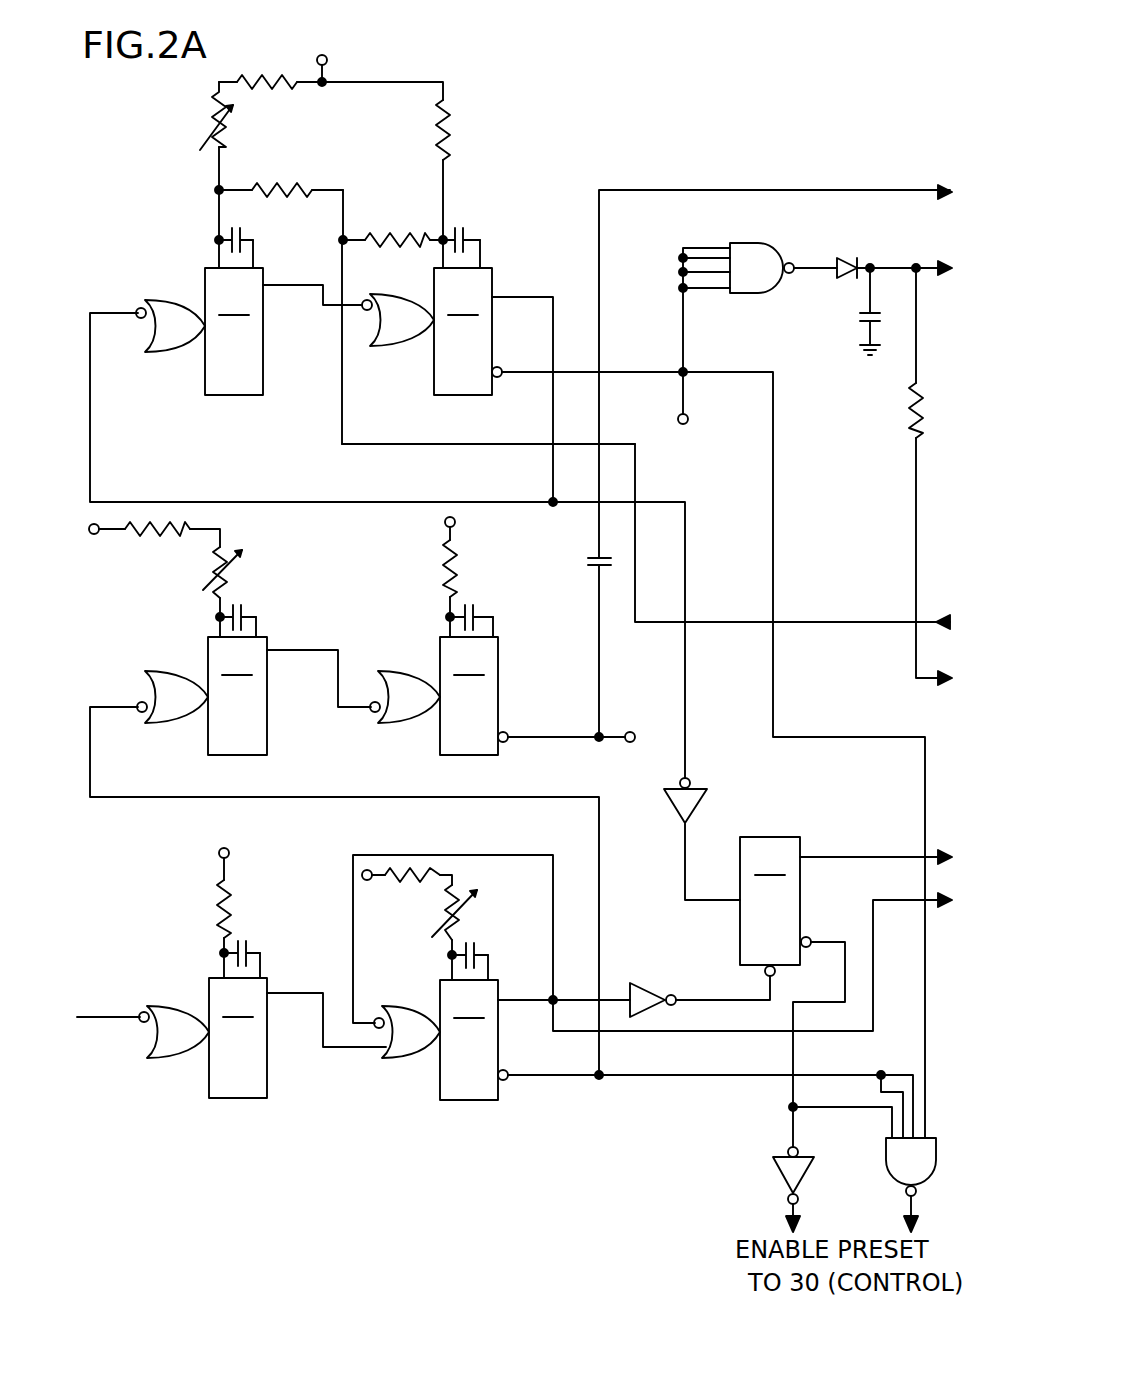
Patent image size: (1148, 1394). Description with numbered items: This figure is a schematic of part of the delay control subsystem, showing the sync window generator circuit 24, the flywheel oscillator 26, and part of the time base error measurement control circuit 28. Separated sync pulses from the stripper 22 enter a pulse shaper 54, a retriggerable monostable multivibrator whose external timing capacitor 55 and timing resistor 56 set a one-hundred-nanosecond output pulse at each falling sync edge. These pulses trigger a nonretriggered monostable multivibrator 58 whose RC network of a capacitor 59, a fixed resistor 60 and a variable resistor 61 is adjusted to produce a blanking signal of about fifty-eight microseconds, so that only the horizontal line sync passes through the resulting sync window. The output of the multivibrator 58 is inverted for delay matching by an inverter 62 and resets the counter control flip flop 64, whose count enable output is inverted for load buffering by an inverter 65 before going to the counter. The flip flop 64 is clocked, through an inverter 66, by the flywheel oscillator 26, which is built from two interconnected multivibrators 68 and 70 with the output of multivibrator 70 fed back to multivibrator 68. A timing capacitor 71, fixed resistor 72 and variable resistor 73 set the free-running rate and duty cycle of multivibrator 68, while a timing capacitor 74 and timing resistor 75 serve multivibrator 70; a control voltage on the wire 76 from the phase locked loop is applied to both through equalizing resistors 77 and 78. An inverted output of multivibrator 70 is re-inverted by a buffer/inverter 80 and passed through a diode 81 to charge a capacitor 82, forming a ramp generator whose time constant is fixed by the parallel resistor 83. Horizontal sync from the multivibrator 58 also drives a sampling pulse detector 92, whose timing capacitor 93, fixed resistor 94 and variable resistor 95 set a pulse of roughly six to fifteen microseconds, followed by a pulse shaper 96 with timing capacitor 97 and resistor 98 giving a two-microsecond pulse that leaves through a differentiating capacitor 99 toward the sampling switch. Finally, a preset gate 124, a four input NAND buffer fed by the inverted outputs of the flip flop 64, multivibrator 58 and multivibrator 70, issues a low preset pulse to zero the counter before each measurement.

The stripper 22 is at (120, 1074).
The sync window generator circuit 24 is at (362, 1140).
The flywheel oscillator 26 is at (183, 231).
The time base error measurement control circuit 28 is at (680, 1145).
The pulse shaper 54 is at (207, 1038).
The timing capacitor 55 is at (250, 950).
The timing resistor 56 is at (236, 900).
The nonretriggered monostable multivibrator 58 is at (440, 1040).
The capacitor 59 is at (480, 950).
The fixed resistor 60 is at (413, 884).
The variable resistor 61 is at (468, 905).
The inverter 62 is at (664, 984).
The counter control flip flop 64 is at (770, 901).
The inverter 65 is at (775, 1170).
The inverter 66 is at (698, 790).
The multivibrator 68 is at (204, 331).
The multivibrator 70 is at (431, 331).
The timing capacitor 71 is at (244, 235).
The fixed resistor 72 is at (250, 74).
The variable resistor 73 is at (207, 122).
The timing capacitor 74 is at (467, 235).
The timing resistor 75 is at (462, 130).
The wire 76 is at (360, 440).
The equalizing resistor 77 is at (281, 178).
The equalizing resistor 78 is at (412, 236).
The buffer/inverter 80 is at (730, 243).
The diode 81 is at (856, 258).
The capacitor 82 is at (861, 320).
The parallel resistor 83 is at (908, 420).
The sampling pulse detector 92 is at (206, 696).
The timing capacitor 93 is at (245, 614).
The fixed resistor 94 is at (172, 538).
The variable resistor 95 is at (234, 570).
The pulse shaper 96 is at (438, 696).
The timing capacitor 97 is at (476, 610).
The resistor 98 is at (443, 568).
The differentiating capacitor 99 is at (582, 565).
The preset gate 124 is at (888, 1170).